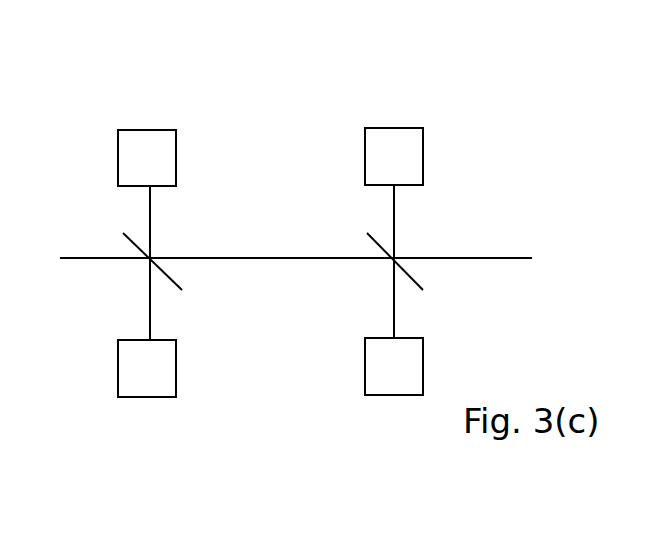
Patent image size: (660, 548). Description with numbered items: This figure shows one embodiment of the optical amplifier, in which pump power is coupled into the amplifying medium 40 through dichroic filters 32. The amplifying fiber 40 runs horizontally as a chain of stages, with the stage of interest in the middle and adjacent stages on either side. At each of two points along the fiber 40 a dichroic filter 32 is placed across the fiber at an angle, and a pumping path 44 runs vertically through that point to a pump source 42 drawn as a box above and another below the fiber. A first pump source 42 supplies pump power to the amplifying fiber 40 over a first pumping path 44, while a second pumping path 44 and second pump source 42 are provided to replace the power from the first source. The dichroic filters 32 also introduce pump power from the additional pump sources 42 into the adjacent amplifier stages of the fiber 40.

The amplifying medium 40 is at (477, 225).
The pump source 42 is at (392, 430).
The pumping path 44 is at (393, 310).
The dichroic filter 32 is at (168, 280).